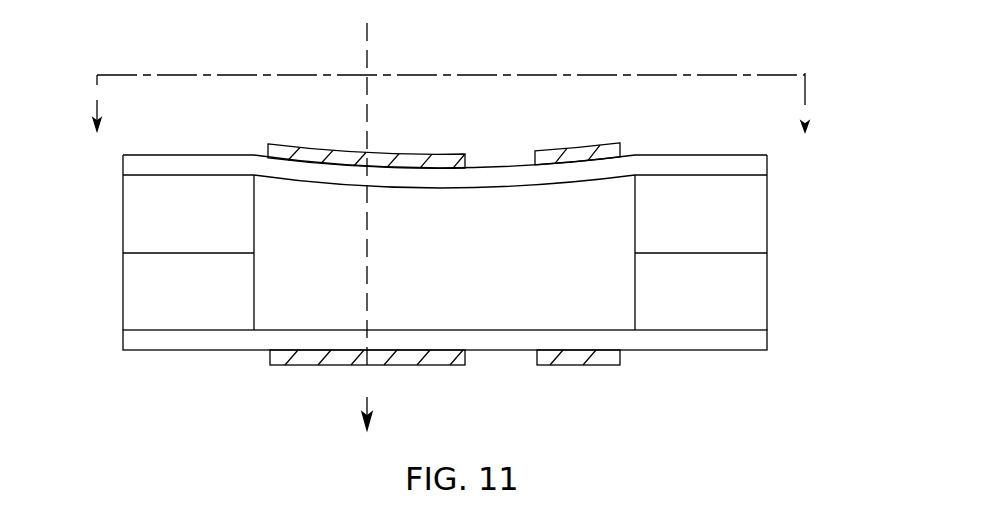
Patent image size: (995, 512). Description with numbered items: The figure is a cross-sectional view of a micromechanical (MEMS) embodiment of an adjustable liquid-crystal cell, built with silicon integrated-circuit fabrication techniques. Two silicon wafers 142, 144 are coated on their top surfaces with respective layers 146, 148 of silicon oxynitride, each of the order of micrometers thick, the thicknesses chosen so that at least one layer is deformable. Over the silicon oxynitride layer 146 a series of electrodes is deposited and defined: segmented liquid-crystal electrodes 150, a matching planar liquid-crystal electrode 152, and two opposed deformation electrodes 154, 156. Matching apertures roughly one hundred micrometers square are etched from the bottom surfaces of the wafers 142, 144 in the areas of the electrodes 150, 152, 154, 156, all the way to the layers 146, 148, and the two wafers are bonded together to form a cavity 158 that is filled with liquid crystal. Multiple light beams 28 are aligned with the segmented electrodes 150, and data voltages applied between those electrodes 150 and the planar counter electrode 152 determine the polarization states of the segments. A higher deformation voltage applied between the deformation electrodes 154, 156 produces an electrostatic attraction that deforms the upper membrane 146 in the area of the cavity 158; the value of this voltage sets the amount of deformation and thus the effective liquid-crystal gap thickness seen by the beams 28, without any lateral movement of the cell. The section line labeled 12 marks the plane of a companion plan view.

The light beams 28 is at (368, 32).
The section line 12- 12 is at (451, 102).
The silicon oxynitride layer 146 is at (760, 165).
The silicon wafer 142 is at (760, 212).
The silicon wafer 144 is at (760, 293).
The silicon oxynitride layer 148 is at (760, 340).
The cavity 158 is at (268, 208).
The segmented liquid-crystal electrodes 150 is at (407, 154).
The deformation electrode 154 is at (575, 152).
The planar liquid-crystal electrode 152 is at (405, 364).
The deformation electrode 156 is at (575, 364).